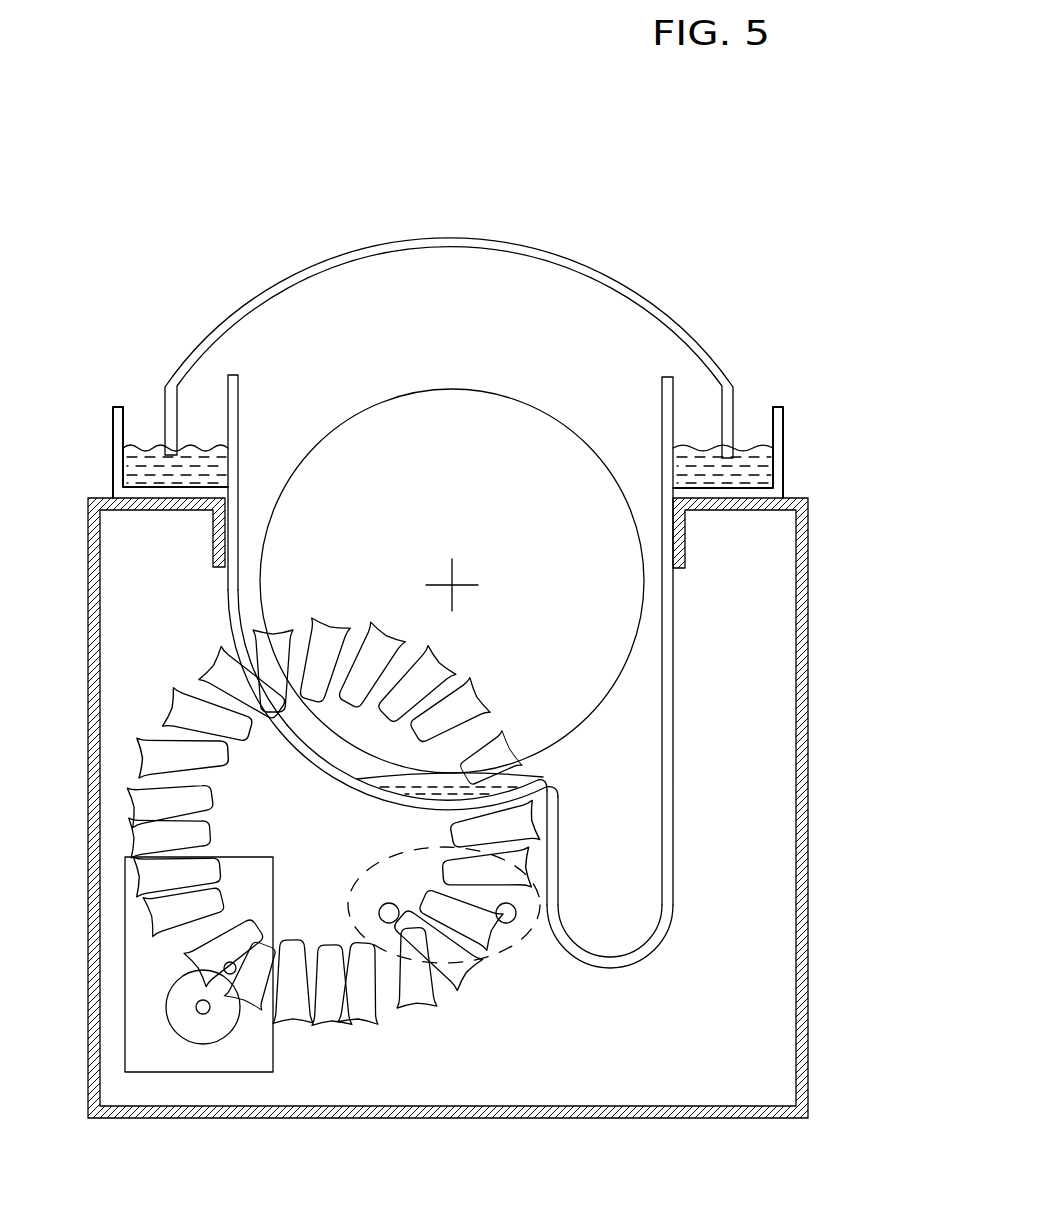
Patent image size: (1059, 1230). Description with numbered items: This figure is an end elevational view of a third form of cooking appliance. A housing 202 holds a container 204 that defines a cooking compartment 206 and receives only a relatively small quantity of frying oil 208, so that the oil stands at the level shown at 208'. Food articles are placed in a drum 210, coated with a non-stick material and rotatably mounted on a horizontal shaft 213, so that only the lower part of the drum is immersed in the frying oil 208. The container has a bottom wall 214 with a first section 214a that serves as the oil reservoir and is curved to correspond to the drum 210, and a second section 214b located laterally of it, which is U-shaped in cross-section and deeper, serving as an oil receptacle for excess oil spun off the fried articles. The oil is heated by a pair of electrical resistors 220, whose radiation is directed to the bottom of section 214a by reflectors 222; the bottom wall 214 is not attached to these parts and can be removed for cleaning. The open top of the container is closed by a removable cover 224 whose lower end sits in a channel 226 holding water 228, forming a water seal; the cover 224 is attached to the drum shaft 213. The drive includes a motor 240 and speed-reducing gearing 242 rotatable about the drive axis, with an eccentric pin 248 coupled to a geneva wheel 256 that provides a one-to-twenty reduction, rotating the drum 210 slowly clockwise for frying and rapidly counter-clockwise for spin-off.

The housing 202 is at (816, 566).
The container 204 is at (232, 603).
The cooking compartment 206 is at (247, 555).
The frying oil 208 is at (435, 819).
The oil level 208' is at (477, 711).
The drum 210 is at (390, 392).
The horizontal shaft 213 is at (440, 580).
The bottom wall 214 is at (556, 782).
The first section 214a is at (343, 780).
The second section 214b is at (605, 956).
The electrical resistors 220 is at (509, 923).
The reflectors 222 is at (367, 860).
The removable cover 224 is at (393, 240).
The channel 226 is at (785, 415).
The water 228 is at (745, 448).
The motor 240 is at (243, 1055).
The speed-reducing gearing 242 is at (190, 1028).
The pin 248 is at (237, 998).
The geneva wheel 256 is at (316, 650).